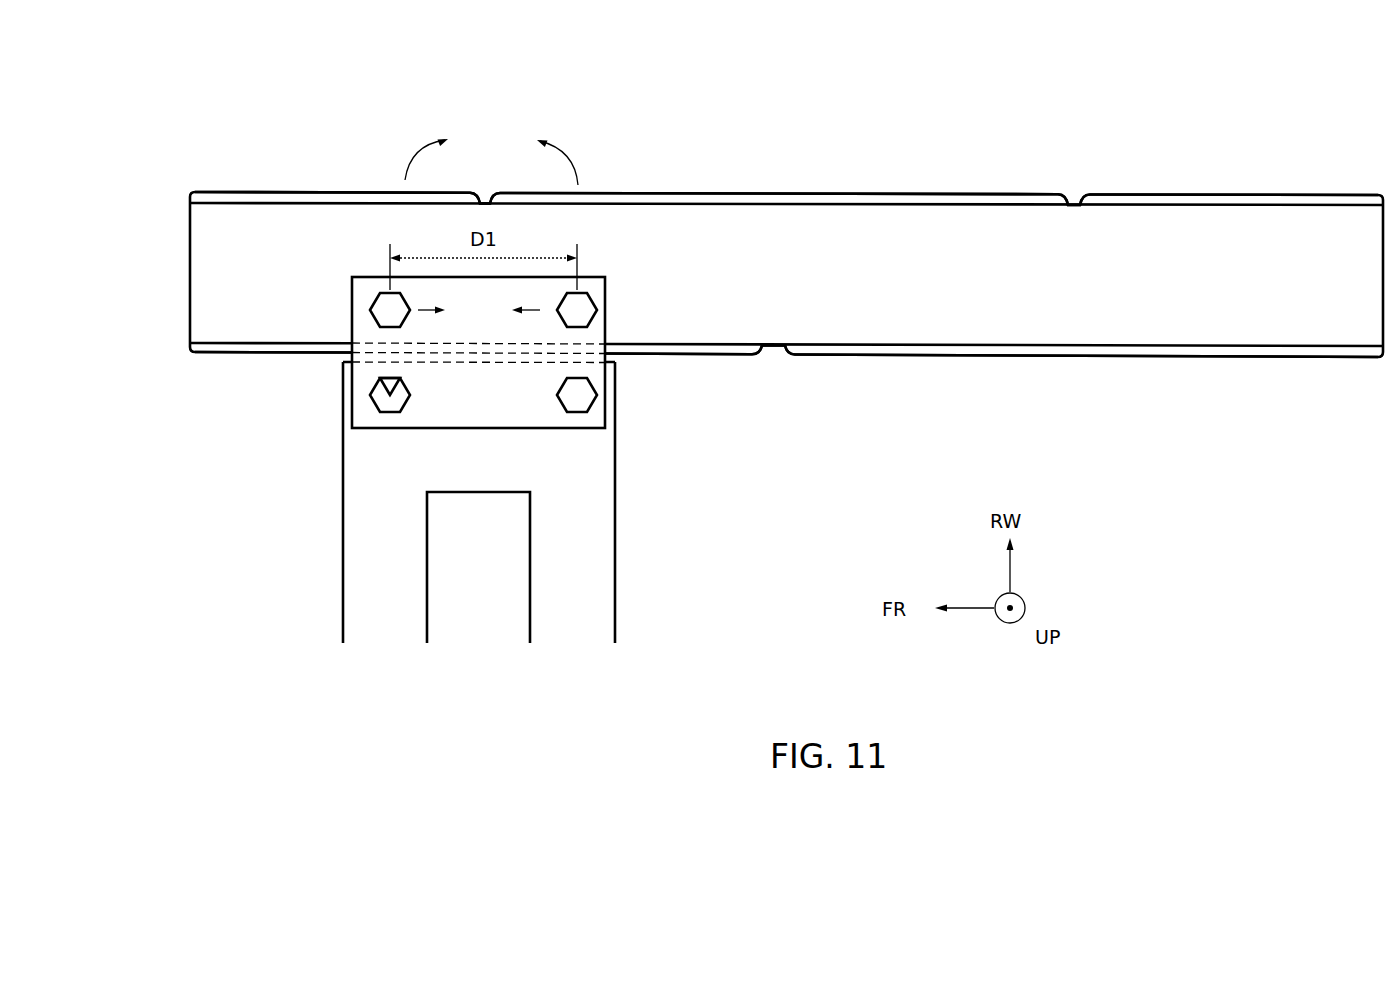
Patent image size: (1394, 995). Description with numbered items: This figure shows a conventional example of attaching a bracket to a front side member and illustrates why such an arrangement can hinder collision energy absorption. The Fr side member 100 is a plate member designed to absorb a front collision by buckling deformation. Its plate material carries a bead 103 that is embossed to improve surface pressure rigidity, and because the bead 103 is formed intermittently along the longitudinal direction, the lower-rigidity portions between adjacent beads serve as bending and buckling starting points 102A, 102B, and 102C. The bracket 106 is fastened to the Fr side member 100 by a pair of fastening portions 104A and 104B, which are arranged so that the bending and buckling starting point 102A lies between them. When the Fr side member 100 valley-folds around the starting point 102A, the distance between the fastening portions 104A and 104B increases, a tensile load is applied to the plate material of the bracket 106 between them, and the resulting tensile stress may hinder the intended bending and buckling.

The Fr side member 100 is at (186, 273).
The bending and buckling starting point 102A is at (487, 186).
The bending and buckling starting point 102B is at (775, 372).
The bending and buckling starting point 102C is at (1072, 186).
The bead 103 is at (300, 192).
The fastening portion 104A is at (385, 310).
The fastening portion 104B is at (598, 310).
The bracket 106 is at (540, 418).